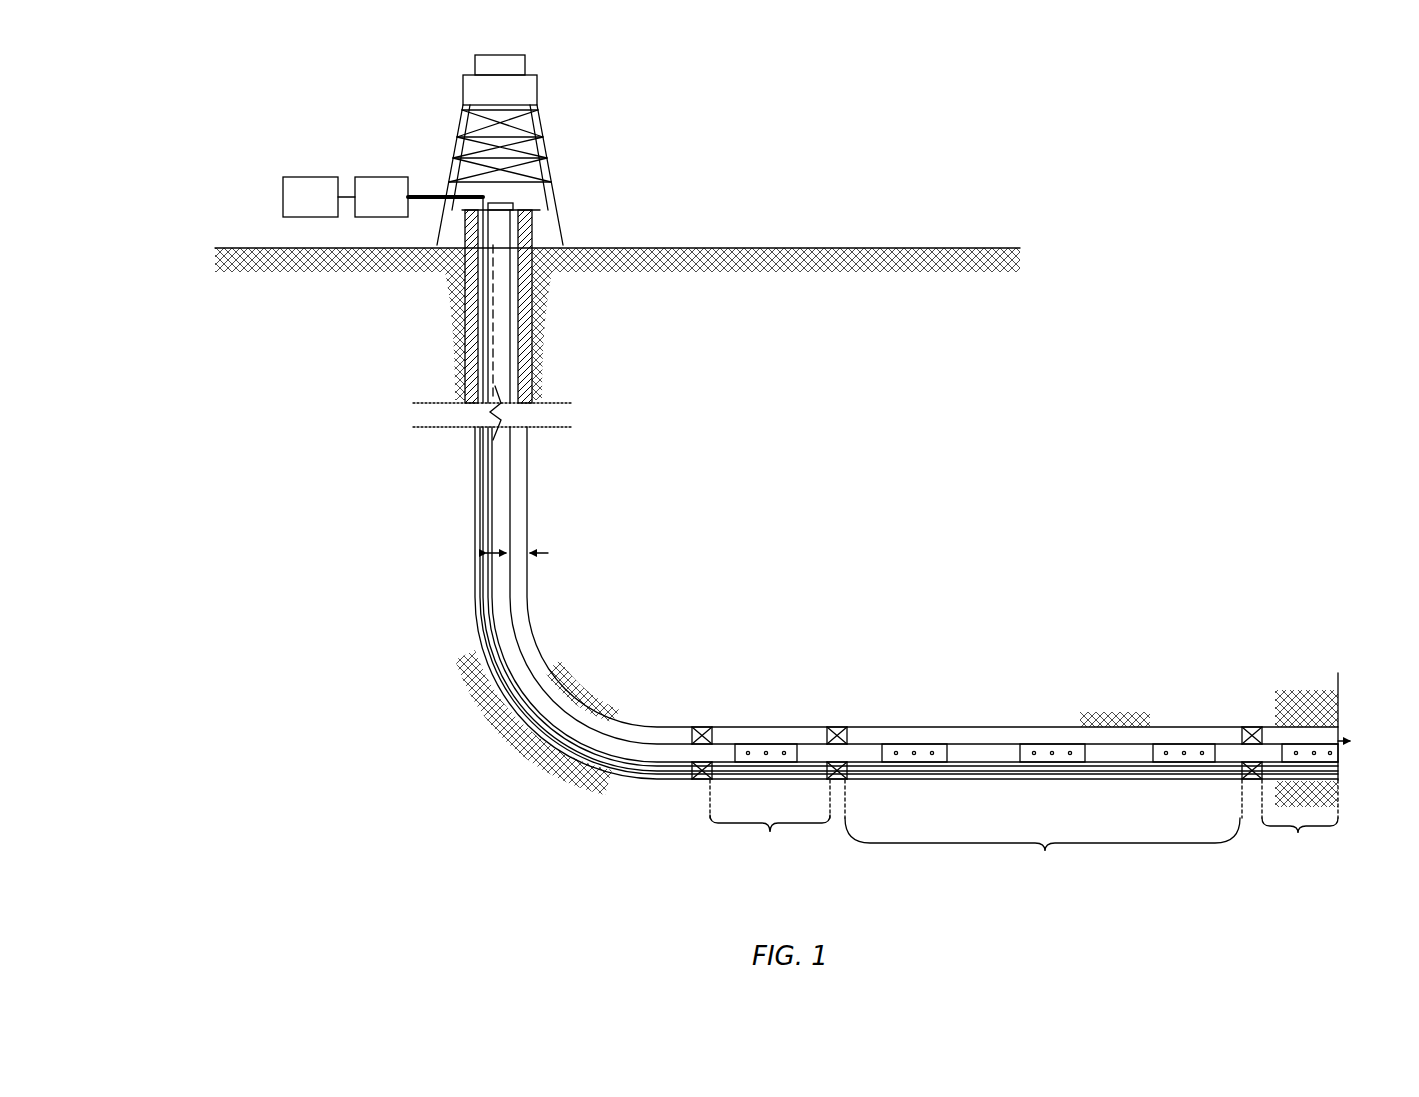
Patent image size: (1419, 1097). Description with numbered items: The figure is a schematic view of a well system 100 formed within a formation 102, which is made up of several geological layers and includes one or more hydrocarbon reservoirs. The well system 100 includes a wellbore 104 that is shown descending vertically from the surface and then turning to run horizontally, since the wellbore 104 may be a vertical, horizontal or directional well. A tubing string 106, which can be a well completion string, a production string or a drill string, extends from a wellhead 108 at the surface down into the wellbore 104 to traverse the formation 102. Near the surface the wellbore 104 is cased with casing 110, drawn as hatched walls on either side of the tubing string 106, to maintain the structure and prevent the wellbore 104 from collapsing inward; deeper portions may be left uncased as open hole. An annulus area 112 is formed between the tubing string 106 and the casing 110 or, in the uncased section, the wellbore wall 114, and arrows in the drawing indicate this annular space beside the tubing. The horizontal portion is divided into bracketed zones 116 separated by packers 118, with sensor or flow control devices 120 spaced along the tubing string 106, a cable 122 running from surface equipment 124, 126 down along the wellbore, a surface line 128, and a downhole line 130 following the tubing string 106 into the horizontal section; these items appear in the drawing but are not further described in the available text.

The well system 100 is at (1182, 180).
The formation 102 is at (353, 495).
The wellbore 104 is at (518, 456).
The tubing string 106 is at (512, 508).
The wellhead 108 is at (513, 207).
The casing 110 is at (530, 292).
The annulus area 112 is at (527, 565).
The wellbore wall 114 is at (527, 498).
The zones 116 is at (1024, 841).
The packers 118 is at (703, 727).
The sensors 120 is at (770, 744).
The cable 122 is at (436, 195).
The computing device 124 is at (330, 210).
The surface unit 126 is at (401, 210).
The surface 128 is at (697, 248).
The fiber optic cable 130 is at (483, 481).